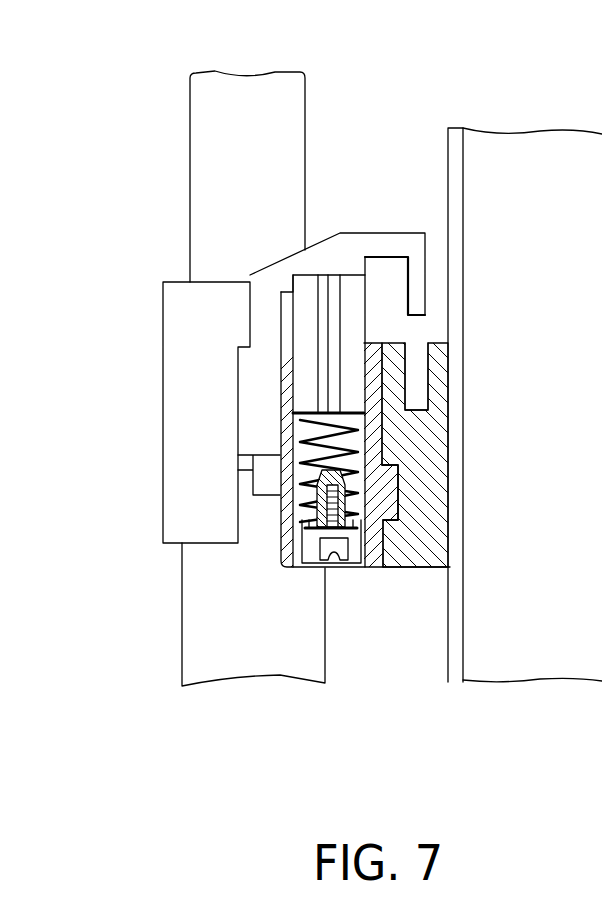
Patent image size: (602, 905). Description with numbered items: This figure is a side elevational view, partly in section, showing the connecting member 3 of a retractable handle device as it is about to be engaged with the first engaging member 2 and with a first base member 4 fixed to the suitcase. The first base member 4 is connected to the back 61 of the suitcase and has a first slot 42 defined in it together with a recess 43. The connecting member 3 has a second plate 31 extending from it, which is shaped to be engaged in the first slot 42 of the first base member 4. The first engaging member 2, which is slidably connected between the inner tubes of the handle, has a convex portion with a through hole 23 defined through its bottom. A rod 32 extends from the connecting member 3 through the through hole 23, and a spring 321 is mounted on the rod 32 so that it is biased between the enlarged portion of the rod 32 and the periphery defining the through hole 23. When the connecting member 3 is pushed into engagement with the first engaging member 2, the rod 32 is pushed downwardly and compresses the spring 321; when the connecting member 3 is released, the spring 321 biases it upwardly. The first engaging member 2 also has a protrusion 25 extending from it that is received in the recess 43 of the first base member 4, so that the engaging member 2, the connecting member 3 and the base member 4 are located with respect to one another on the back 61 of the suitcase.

The first engaging member 2 is at (178, 510).
The connecting member 3 is at (373, 232).
The second plate 31 is at (415, 290).
The rod 32 is at (318, 421).
The spring 321 is at (330, 458).
The through hole 23 is at (328, 561).
The protrusion 25 is at (393, 497).
The first base member 4 is at (417, 560).
The first slot 42 is at (416, 383).
The recess 43 is at (388, 510).
The back of the suitcase 61 is at (445, 167).